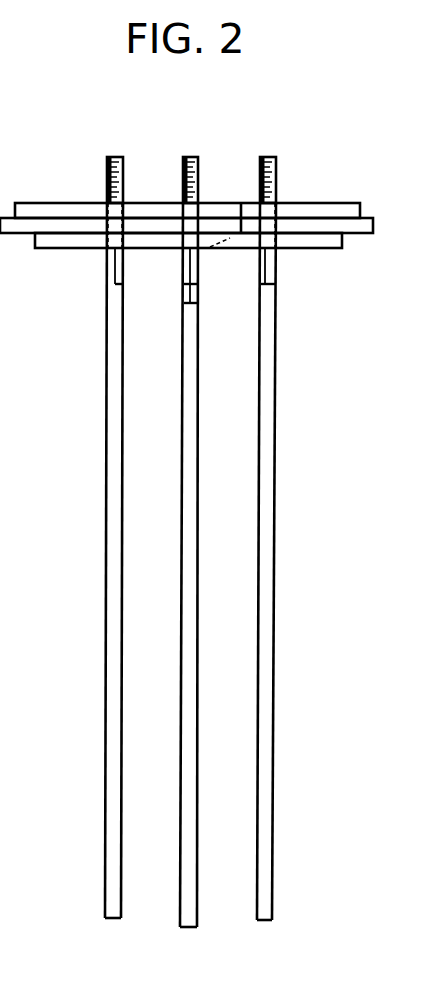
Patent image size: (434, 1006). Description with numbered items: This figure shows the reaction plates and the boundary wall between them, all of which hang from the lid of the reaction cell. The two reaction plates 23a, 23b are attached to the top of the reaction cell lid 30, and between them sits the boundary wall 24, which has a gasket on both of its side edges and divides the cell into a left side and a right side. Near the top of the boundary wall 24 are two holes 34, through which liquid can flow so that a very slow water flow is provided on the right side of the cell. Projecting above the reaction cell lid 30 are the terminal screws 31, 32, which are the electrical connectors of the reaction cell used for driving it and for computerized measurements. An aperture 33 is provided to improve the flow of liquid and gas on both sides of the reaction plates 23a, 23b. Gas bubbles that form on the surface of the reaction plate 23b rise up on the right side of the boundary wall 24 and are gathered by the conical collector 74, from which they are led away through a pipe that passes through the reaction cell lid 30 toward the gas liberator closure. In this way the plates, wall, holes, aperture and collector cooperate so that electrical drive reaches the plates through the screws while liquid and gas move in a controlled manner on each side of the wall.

The reaction plate 23a is at (113, 597).
The reaction plate 23b is at (268, 632).
The boundary wall 24 is at (188, 618).
The reaction cell lid 30 is at (310, 213).
The terminal screw 31 is at (107, 178).
The terminal screw 32 is at (183, 197).
The aperture 33 is at (100, 265).
The holes 34 is at (204, 292).
The conical collector 74 is at (318, 240).